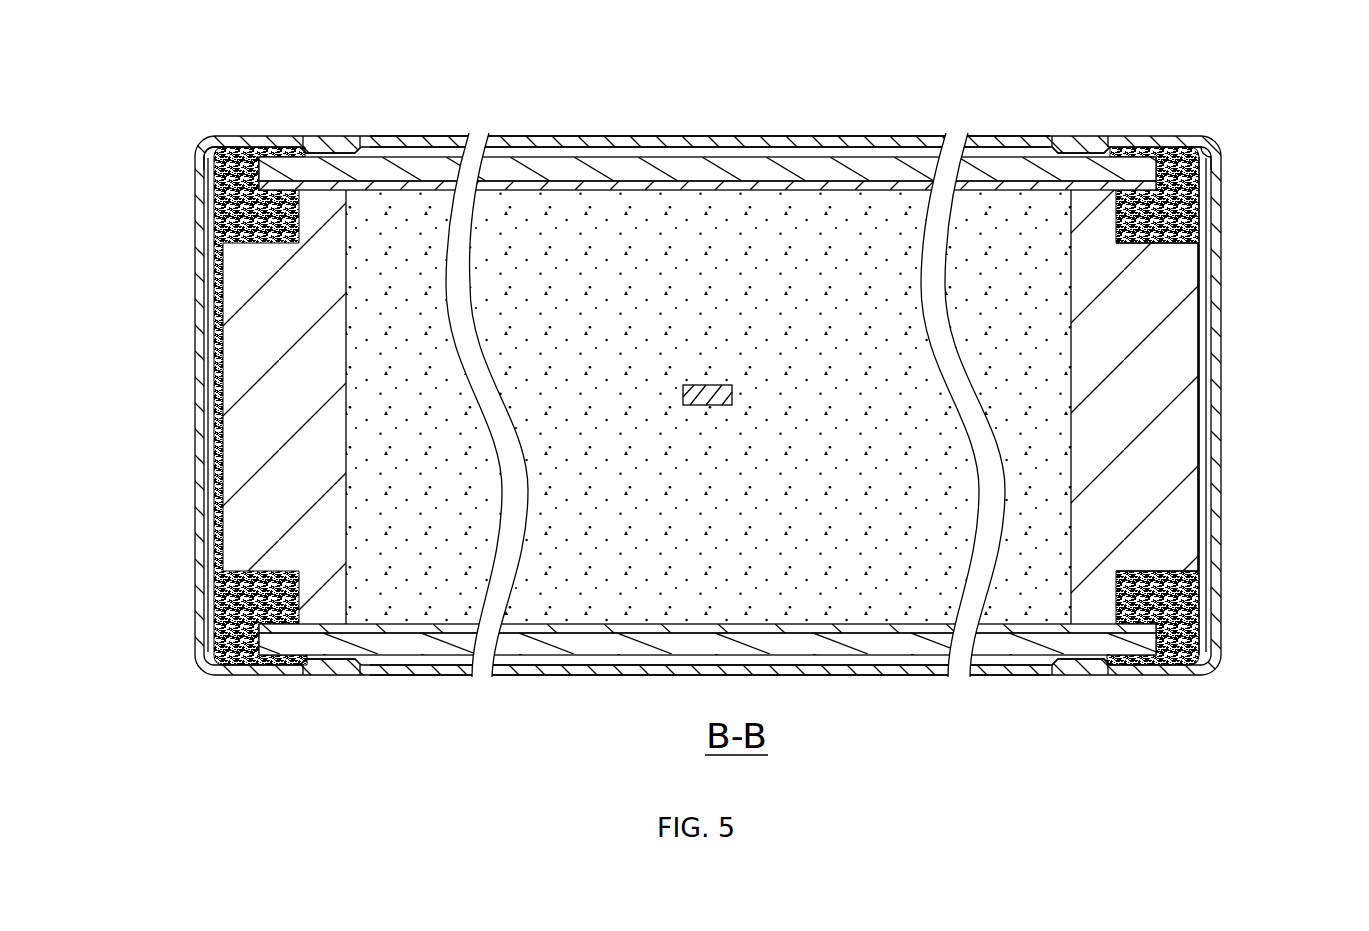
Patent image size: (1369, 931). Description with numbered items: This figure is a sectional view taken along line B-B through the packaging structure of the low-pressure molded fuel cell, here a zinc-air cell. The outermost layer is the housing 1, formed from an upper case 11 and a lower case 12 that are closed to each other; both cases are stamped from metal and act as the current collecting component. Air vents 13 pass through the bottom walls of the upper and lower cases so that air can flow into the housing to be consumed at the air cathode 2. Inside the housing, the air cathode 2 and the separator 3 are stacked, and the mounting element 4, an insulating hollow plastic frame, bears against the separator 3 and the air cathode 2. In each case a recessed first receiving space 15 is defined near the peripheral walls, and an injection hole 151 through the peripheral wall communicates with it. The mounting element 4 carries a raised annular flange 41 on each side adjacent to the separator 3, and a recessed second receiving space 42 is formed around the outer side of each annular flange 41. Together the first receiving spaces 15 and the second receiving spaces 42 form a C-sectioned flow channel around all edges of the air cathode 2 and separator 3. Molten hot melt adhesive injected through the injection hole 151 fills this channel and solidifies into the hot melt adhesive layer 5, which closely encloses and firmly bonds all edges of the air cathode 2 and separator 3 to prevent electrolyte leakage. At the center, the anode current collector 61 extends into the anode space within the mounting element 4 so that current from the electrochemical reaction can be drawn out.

The housing 1 is at (897, 676).
The upper case 11 is at (796, 138).
The lower case 12 is at (625, 673).
The air vents 13 is at (576, 137).
The first receiving space 15 is at (240, 150).
The injection hole 151 is at (206, 222).
The air cathode 2 is at (846, 166).
The separator 3 is at (652, 186).
The mounting element 4 is at (265, 398).
The hot melt adhesive layer 5 is at (216, 188).
The annular flange 41 is at (1150, 205).
The second receiving space 42 is at (1200, 234).
The anode current collector 61 is at (717, 385).